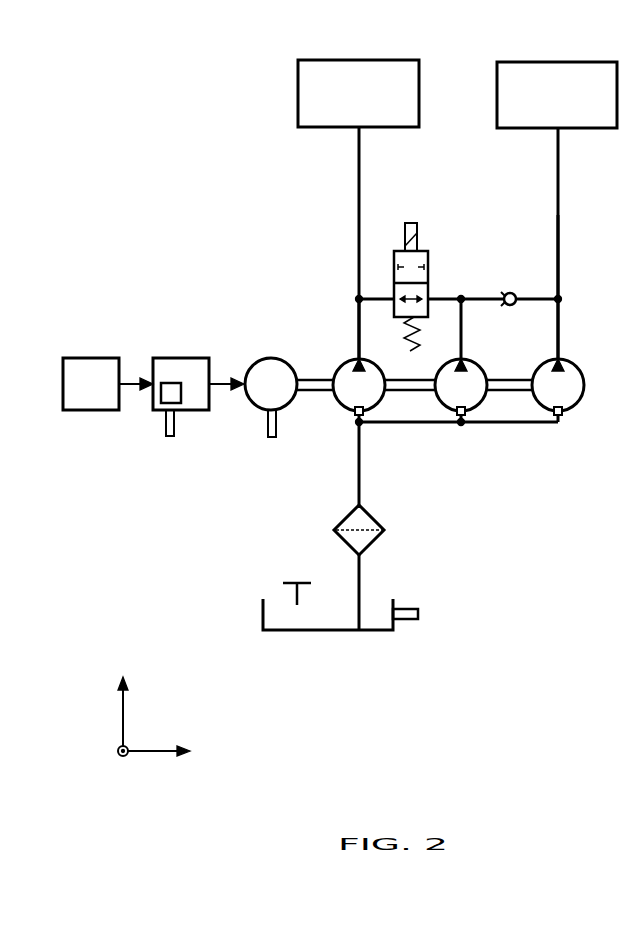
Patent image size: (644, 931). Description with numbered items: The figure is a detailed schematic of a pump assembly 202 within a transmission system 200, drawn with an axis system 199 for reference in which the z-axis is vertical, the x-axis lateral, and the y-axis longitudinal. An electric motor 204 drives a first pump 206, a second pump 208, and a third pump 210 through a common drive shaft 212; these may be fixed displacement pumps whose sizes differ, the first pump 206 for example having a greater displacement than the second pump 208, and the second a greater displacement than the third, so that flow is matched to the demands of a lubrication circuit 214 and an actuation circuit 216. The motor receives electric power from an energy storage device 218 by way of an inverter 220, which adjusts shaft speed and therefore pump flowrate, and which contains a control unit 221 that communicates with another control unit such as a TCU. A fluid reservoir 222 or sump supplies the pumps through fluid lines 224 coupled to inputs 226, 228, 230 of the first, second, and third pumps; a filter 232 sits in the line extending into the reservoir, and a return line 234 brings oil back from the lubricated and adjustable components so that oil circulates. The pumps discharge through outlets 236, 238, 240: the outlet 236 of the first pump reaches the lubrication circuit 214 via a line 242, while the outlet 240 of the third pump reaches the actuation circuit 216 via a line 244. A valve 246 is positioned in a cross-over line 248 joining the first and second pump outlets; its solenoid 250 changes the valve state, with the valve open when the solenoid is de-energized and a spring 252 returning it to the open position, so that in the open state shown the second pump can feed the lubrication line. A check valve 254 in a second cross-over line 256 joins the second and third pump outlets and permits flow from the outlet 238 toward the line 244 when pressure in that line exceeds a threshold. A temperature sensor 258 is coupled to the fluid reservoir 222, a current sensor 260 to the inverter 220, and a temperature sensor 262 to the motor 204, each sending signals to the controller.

The axis system 199 is at (152, 728).
The transmission system 200 is at (115, 123).
The pump assembly 202 is at (149, 287).
The electric motor 204 is at (268, 357).
The first pump 206 is at (347, 410).
The second pump 208 is at (487, 350).
The third pump 210 is at (582, 370).
The drive shaft 212 is at (314, 379).
The lubrication circuit 214 is at (310, 65).
The actuation circuit 216 is at (504, 65).
The energy storage device 218 is at (90, 357).
The inverter 220 is at (180, 357).
The control unit 221 is at (160, 402).
The fluid reservoir 222 is at (263, 605).
The fluid lines 224 is at (362, 457).
The input of first pump 226 is at (350, 427).
The input of second pump 228 is at (470, 409).
The input of third pump 230 is at (567, 412).
The filter 232 is at (380, 520).
The return line 234 is at (283, 595).
The outlet of first pump 236 is at (356, 357).
The outlet of second pump 238 is at (461, 358).
The outlet of third pump 240 is at (562, 358).
The line 242 is at (359, 215).
The line 244 is at (558, 215).
The valve 246 is at (459, 268).
The cross-over line 248 is at (447, 297).
The solenoid 250 is at (411, 222).
The spring 252 is at (400, 320).
The check valve 254 is at (507, 292).
The cross-over line 256 is at (535, 298).
The temperature sensor 258 is at (420, 614).
The current sensor 260 is at (176, 427).
The temperature sensor 262 is at (268, 438).